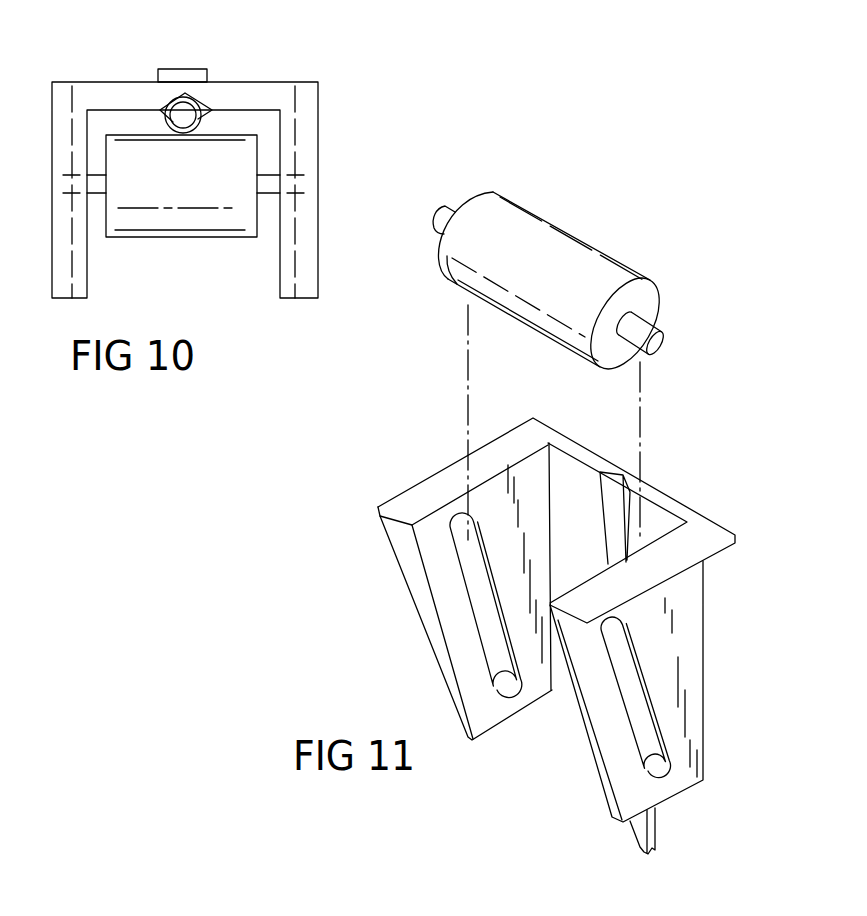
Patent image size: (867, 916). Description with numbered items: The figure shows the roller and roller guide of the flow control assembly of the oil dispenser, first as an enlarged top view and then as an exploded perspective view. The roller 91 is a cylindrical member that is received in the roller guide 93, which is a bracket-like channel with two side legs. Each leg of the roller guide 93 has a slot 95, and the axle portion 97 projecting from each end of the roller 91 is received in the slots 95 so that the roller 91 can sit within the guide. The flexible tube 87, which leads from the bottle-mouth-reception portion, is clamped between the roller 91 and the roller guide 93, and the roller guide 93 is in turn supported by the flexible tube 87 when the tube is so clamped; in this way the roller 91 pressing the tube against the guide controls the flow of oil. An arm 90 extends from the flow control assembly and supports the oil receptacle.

In FIG. 10, the flexible tube 87 is at (200, 117).
In FIG. 11, the arm 90 is at (658, 823).
In FIG. 10, the roller 91 is at (132, 158).
In FIG. 11, the roller 91 is at (578, 253).
In FIG. 10, the roller guide 93 is at (300, 133).
In FIG. 11, the roller guide 93 is at (690, 603).
In FIG. 11, the slots 95 is at (477, 603).
In FIG. 11, the axle portion 97 is at (452, 210).